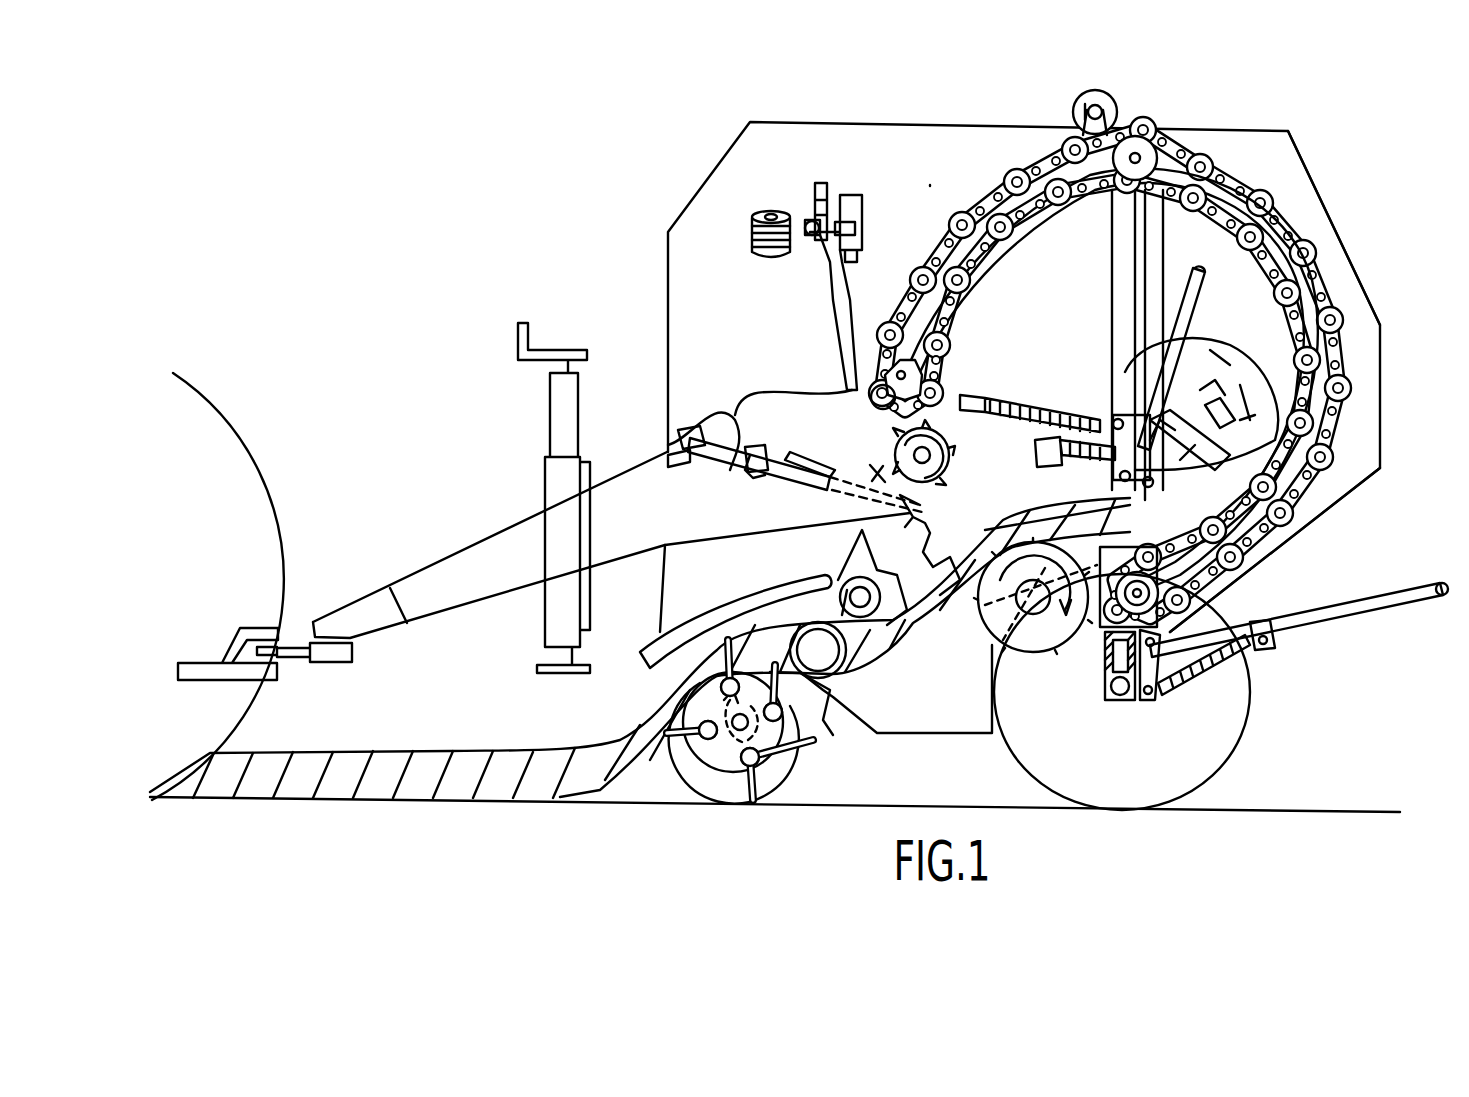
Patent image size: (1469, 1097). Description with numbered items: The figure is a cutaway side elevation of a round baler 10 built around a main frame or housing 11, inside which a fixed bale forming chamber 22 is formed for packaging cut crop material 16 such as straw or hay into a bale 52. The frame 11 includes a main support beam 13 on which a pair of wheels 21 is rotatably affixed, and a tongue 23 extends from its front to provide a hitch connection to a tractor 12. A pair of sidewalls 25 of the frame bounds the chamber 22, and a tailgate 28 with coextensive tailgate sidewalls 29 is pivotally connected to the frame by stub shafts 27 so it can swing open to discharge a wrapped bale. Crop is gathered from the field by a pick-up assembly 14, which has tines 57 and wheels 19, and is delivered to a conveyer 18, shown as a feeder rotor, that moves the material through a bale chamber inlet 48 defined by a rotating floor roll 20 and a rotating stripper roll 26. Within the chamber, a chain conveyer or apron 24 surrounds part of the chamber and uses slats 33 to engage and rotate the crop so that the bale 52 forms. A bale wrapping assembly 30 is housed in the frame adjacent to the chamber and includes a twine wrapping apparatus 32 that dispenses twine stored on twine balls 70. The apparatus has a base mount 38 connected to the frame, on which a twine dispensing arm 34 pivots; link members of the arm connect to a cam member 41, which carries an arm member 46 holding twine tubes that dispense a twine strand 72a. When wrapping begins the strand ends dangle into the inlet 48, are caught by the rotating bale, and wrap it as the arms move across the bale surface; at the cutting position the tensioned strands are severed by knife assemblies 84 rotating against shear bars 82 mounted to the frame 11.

The round baler 10 is at (585, 212).
The main frame or housing 11 is at (848, 112).
The tractor 12 is at (205, 345).
The main support beam 13 is at (1100, 688).
The pick-up assembly 14 is at (715, 795).
The cut crop material 16 is at (378, 750).
The conveyer 18 is at (838, 583).
The wheels 19 is at (648, 800).
The floor roll 20 is at (985, 630).
The wheels 21 is at (1245, 735).
The bale forming chamber 22 is at (1062, 296).
The tongue 23 is at (470, 595).
The chain conveyer (apron) 24 is at (1262, 270).
The sidewalls 25 is at (932, 170).
The stripper roll 26 is at (950, 452).
The stub shafts 27 is at (1136, 155).
The tailgate 28 is at (1315, 522).
The tailgate sidewalls 29 is at (1279, 172).
The bale wrapping assembly 30 is at (812, 378).
The twine wrapping apparatus 32 is at (800, 178).
The slats 33 is at (1312, 255).
The twine dispensing arm 34 is at (675, 468).
The base mount 38 is at (688, 432).
The cam member 41 is at (728, 420).
The arm member 46 is at (812, 465).
The bale chamber inlet 48 is at (1000, 522).
The bale 52 is at (1332, 418).
The tines 57 is at (770, 790).
The twine balls 70 is at (760, 210).
The twine strand 72a is at (770, 490).
The shear bars 82 is at (850, 518).
The knife assemblies 84 is at (873, 447).